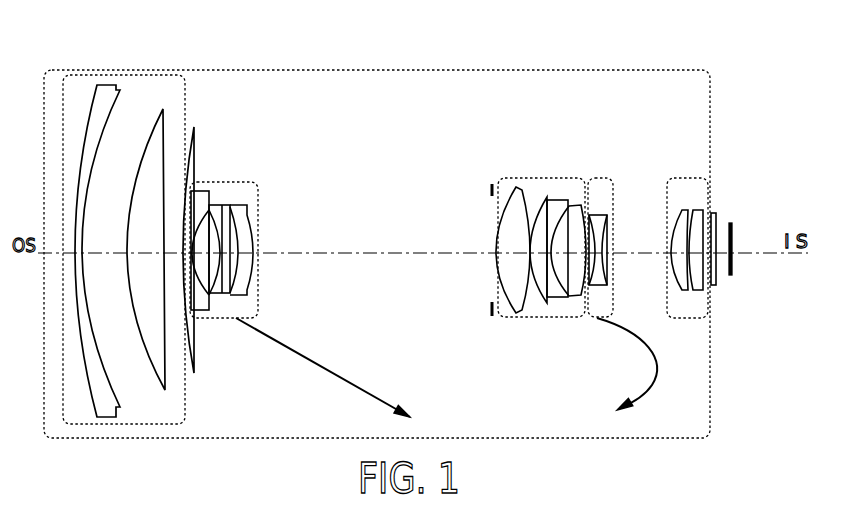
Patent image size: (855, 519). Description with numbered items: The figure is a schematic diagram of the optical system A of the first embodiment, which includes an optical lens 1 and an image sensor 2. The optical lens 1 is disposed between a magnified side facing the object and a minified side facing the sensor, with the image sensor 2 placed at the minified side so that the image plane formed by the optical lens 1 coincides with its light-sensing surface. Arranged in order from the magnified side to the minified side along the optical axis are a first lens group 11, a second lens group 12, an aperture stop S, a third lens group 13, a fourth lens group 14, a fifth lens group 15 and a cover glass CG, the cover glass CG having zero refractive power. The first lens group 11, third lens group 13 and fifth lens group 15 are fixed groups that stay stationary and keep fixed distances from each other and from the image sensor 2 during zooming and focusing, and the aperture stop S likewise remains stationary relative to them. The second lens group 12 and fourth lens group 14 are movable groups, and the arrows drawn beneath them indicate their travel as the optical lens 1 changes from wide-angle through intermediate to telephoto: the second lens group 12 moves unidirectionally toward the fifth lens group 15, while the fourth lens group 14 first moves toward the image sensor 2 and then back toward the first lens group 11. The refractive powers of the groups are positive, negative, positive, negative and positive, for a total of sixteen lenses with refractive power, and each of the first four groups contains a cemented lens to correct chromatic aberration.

The optical lens 1 is at (272, 70).
The first lens group 11 is at (162, 75).
The second lens group 12 is at (242, 182).
The third lens group 13 is at (530, 178).
The fourth lens group 14 is at (600, 178).
The fifth lens group 15 is at (680, 178).
The image sensor 2 is at (733, 268).
The aperture stop S is at (492, 183).
The cover glass CG is at (714, 213).
The optical system A is at (729, 54).